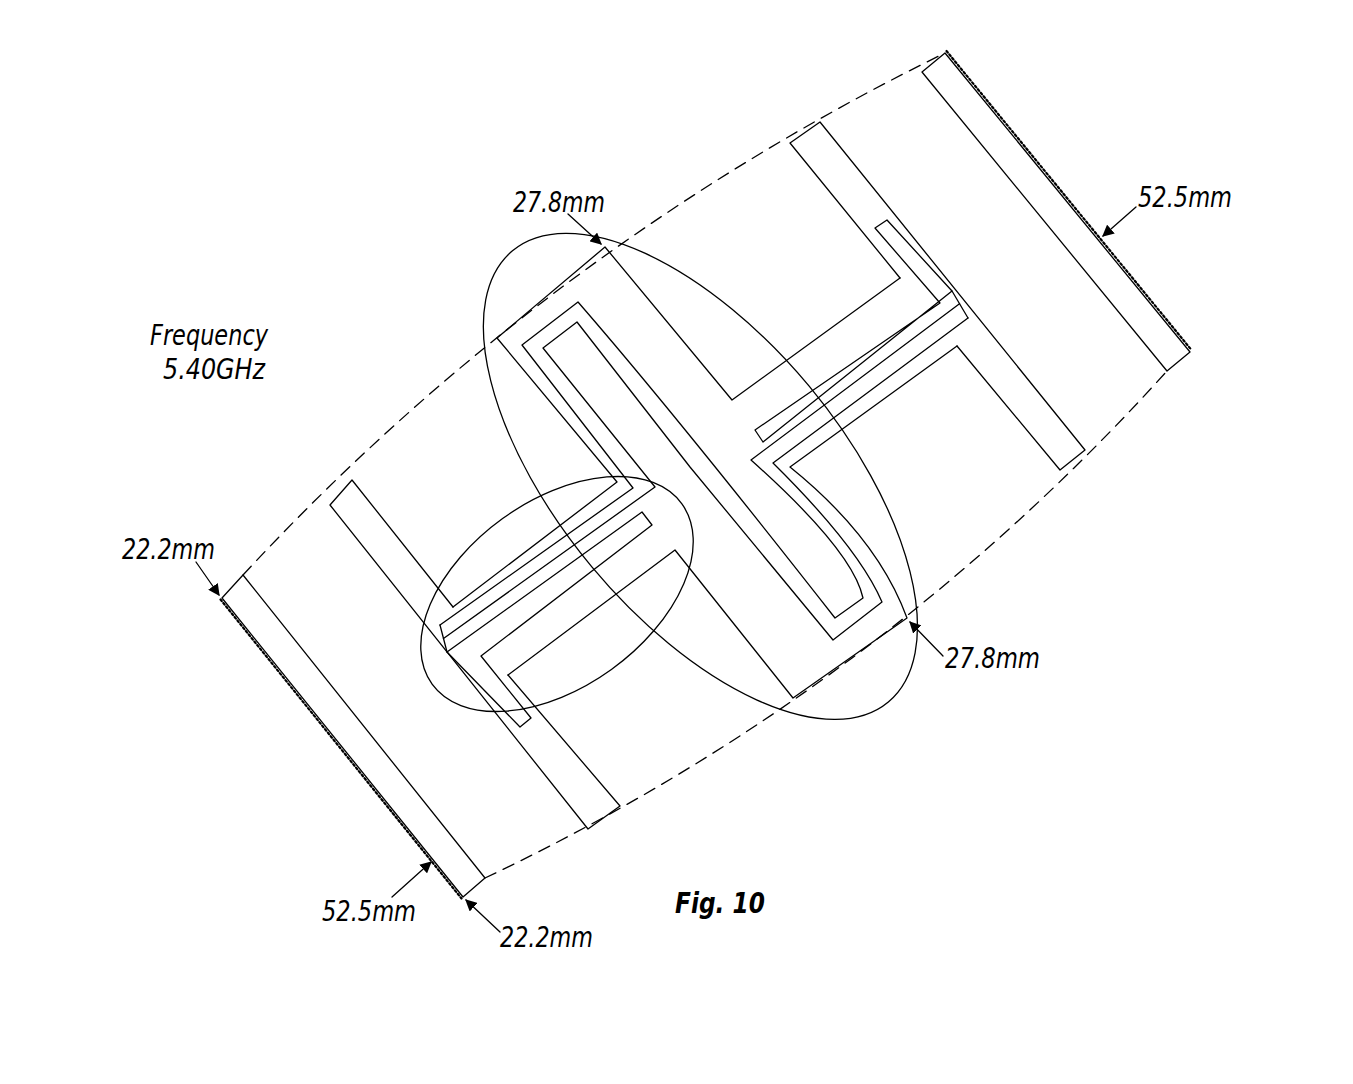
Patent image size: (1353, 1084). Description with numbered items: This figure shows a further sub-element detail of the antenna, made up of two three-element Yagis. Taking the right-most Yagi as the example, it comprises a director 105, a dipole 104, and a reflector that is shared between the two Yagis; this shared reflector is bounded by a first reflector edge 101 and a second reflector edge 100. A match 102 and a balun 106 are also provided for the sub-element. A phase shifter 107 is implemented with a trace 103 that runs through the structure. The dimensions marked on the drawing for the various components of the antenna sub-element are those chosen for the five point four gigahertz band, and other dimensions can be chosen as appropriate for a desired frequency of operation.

The second reflector edge 100 is at (689, 476).
The first reflector edge 101 is at (636, 270).
The match 102 is at (903, 220).
The trace 103 is at (851, 549).
The dipole 104 is at (1088, 478).
The director 105 is at (1188, 368).
The balun 106 is at (412, 692).
The phase shifter 107 is at (880, 704).